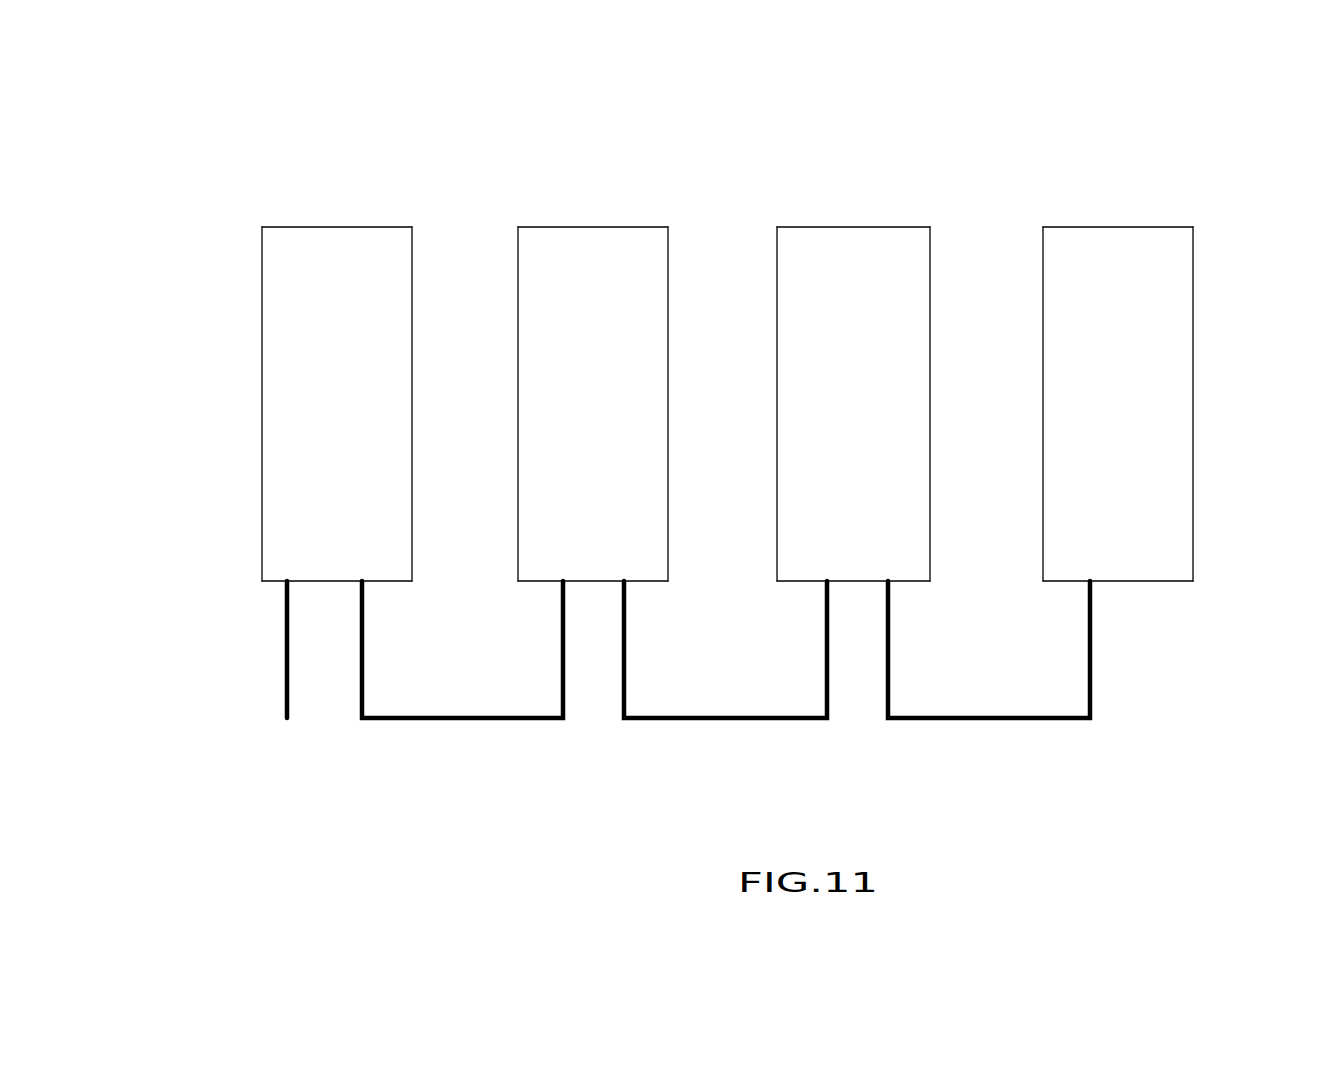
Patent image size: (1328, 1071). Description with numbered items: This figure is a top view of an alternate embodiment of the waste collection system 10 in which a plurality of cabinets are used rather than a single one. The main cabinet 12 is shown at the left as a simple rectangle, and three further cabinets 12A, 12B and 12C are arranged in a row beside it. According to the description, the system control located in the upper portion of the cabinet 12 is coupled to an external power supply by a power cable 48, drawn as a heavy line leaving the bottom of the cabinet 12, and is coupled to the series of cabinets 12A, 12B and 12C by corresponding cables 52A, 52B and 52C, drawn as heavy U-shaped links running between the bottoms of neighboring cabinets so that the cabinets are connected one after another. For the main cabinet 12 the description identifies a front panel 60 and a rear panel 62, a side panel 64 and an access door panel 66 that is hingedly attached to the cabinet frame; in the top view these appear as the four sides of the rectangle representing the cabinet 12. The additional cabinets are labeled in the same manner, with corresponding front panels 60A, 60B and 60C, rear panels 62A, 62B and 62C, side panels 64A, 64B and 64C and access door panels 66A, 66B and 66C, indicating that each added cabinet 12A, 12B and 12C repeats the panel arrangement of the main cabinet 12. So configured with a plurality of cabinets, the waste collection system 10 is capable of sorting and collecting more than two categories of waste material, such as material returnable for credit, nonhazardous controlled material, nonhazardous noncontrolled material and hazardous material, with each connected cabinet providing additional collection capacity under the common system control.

The fluid processing system 10 is at (775, 122).
The cabinet 12 is at (243, 413).
The cabinet 12A is at (603, 207).
The cabinet 12B is at (810, 208).
The cabinet 12C is at (1063, 215).
The power cable 48 is at (285, 646).
The cable 52A is at (427, 722).
The cable 52B is at (760, 723).
The cable 52C is at (983, 723).
The front panel 60 is at (397, 583).
The bottom wall of second unit 60A is at (640, 583).
The bottom wall of third unit 60B is at (802, 583).
The bottom wall of fourth unit 60C is at (1132, 583).
The rear panel 62 is at (367, 227).
The top wall of second unit 62A is at (544, 228).
The top wall of third unit 62B is at (906, 227).
The top wall of fourth unit 62C is at (1172, 227).
The side panel 64 is at (263, 287).
The first side wall of second unit 64A is at (518, 298).
The first side wall of third unit 64B is at (777, 564).
The first side wall of fourth unit 64C is at (1043, 423).
The access door panel 66 is at (410, 447).
The second side wall of second unit 66A is at (669, 347).
The second side wall of third unit 66B is at (929, 313).
The second side wall of fourth unit 66C is at (1193, 413).